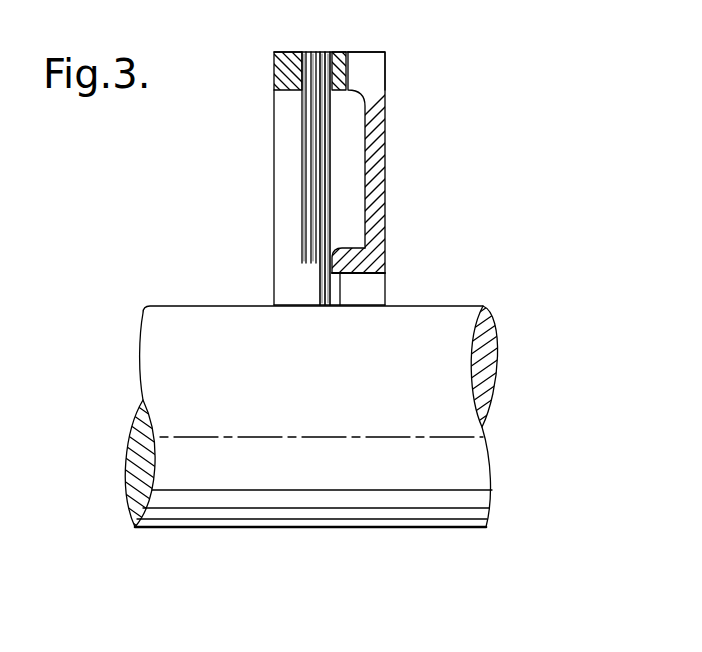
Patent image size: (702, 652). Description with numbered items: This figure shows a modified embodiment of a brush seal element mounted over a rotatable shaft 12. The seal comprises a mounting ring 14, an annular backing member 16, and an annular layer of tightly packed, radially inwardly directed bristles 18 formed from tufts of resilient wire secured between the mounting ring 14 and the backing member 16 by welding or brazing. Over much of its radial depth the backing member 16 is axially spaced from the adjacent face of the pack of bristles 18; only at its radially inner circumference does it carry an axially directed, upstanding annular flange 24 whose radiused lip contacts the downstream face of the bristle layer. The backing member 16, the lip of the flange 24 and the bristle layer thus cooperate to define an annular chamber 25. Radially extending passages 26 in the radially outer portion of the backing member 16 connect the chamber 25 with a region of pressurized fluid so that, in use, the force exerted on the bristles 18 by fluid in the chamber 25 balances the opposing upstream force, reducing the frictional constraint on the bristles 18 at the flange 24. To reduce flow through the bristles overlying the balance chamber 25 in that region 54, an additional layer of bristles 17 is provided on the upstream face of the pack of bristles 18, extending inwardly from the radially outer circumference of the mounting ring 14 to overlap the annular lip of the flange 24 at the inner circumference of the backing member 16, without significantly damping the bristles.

The rotatable shaft 12 is at (172, 322).
The mounting ring 14 is at (290, 77).
The backing member 16 is at (370, 204).
The additional layer of bristles 17 is at (301, 180).
The bristles 18 is at (317, 283).
The annular flange 24 is at (345, 264).
The annular chamber 25 is at (348, 172).
The radially extending passages 26 is at (348, 79).
The region 54 is at (220, 90).